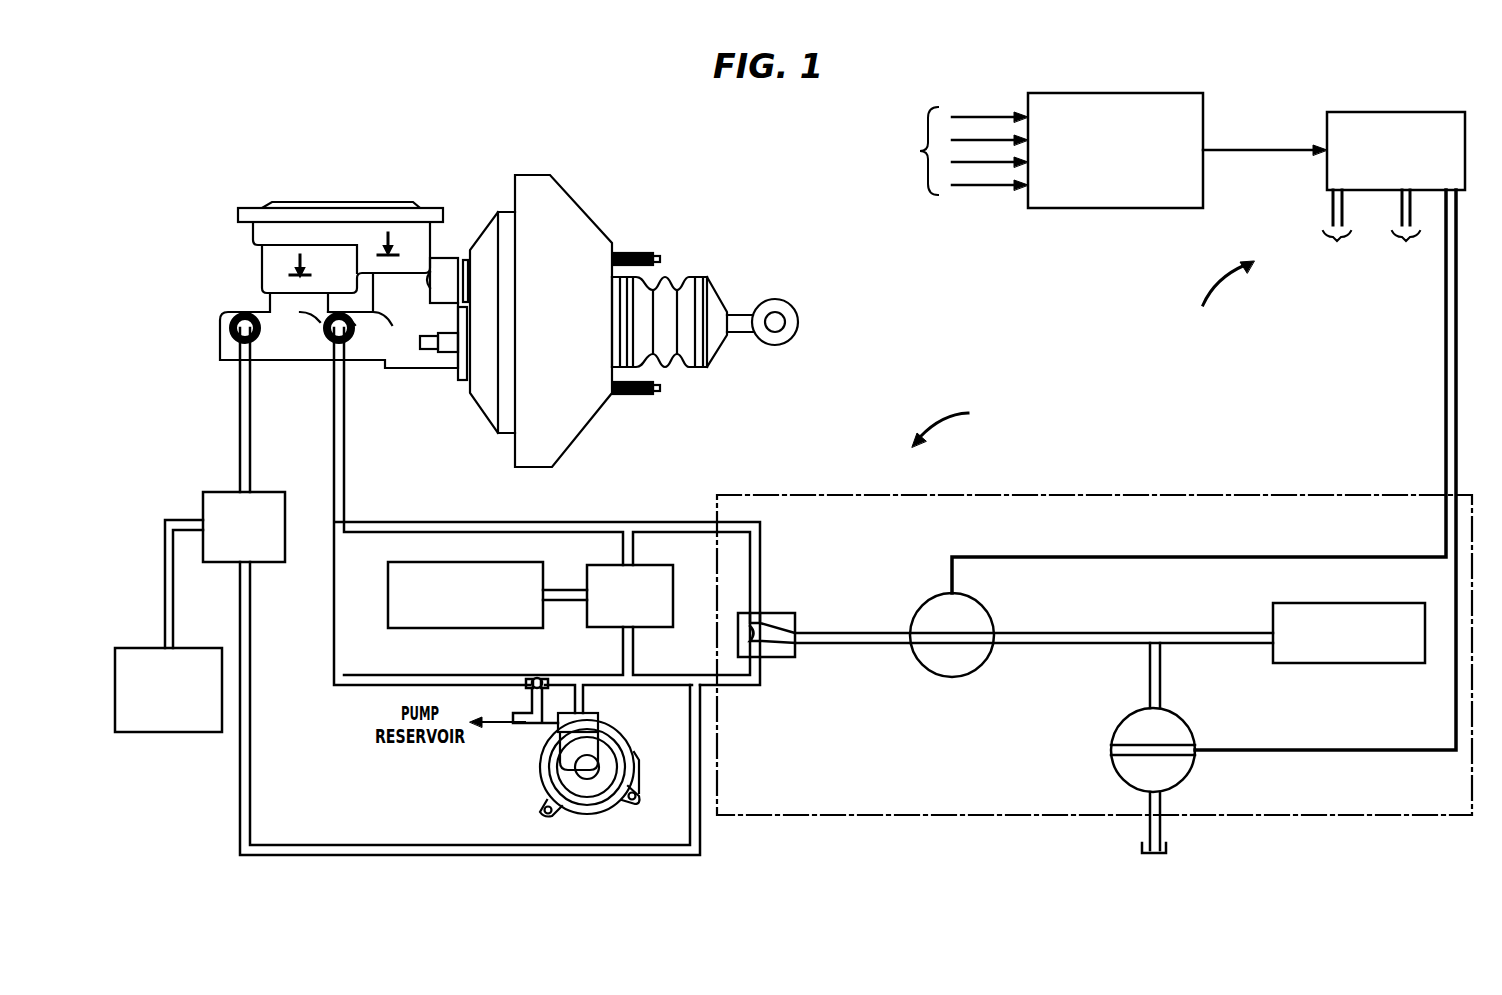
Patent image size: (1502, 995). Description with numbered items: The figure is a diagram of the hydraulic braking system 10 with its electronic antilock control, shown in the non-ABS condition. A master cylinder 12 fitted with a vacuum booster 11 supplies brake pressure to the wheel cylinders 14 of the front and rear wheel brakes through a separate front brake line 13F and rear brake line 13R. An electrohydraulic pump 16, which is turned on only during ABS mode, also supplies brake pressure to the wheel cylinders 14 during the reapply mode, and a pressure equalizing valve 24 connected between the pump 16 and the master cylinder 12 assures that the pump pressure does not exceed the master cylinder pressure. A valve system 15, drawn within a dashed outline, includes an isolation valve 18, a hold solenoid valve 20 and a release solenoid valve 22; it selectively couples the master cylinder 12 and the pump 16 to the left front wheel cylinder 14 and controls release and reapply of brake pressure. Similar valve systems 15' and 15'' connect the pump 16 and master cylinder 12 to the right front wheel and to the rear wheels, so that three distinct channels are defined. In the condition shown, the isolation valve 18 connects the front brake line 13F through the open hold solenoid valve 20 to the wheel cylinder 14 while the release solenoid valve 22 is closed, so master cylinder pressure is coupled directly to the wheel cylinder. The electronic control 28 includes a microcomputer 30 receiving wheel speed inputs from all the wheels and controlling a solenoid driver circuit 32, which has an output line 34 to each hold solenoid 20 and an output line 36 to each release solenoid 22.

The hydraulic braking system 10 is at (954, 426).
The vacuum booster 11 is at (553, 192).
The master cylinder 12 is at (353, 360).
The rear brake line 13R is at (240, 418).
The front brake line 13F is at (334, 442).
The wheel cylinders 14 is at (388, 592).
The valve system 15 is at (1094, 624).
The valve system 15' is at (610, 583).
The valve system 15'' is at (225, 544).
The electrohydraulic pump 16 is at (605, 725).
The isolation valve 18 is at (778, 613).
The hold solenoid valve 20 is at (918, 610).
The release solenoid valve 22 is at (1113, 733).
The pressure equalizing valve 24 is at (535, 679).
The electronic control 28 is at (1219, 300).
The microcomputer 30 is at (1170, 208).
The solenoid driver circuit 32 is at (1327, 180).
The output line 34 is at (1333, 215).
The output line 36 is at (1344, 216).